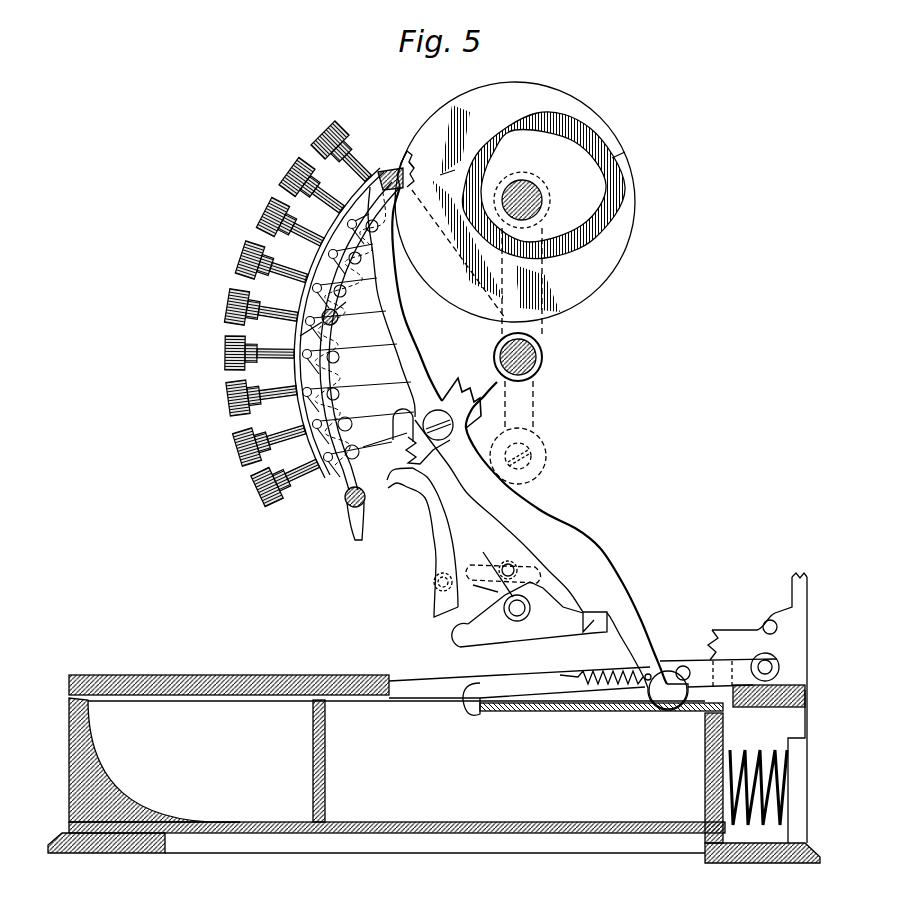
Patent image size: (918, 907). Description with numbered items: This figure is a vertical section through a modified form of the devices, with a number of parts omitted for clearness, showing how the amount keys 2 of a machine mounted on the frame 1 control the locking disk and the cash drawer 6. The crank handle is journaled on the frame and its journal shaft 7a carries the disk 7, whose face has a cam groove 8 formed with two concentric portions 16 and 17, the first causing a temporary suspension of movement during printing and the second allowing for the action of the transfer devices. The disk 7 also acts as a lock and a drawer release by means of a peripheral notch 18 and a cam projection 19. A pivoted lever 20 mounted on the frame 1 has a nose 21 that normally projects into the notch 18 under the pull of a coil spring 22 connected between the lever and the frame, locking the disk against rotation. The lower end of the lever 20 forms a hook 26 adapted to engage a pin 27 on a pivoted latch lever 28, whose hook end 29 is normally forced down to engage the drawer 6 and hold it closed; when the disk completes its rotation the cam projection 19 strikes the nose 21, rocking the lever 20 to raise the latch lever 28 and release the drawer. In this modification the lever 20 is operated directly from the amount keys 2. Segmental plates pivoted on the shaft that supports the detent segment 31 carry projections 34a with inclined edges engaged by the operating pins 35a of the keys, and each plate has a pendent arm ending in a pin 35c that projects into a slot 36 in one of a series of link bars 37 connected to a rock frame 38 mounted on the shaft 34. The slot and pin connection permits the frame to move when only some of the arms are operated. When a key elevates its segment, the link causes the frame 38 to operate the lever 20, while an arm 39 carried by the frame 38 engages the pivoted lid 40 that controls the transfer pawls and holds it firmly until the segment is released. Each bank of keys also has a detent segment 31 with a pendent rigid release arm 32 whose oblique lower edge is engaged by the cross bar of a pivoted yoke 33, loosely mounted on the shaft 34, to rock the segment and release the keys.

The frame 1 is at (536, 390).
The amount keys 2 is at (240, 256).
The cash drawer 6 is at (434, 720).
The disk 7 is at (515, 202).
The journal shaft 7a is at (534, 198).
The cam groove 8 is at (522, 118).
The concentric portion 16 is at (625, 152).
The concentric portion 17 is at (466, 175).
The peripheral notch 18 is at (410, 166).
The cam projection 19 is at (408, 150).
The pivoted lever 20 is at (540, 430).
The nose 21 is at (393, 179).
The coil spring 22 is at (627, 687).
The hook 26 is at (668, 702).
The pin 27 is at (685, 662).
The latch lever 28 is at (545, 678).
The hook end 29 is at (478, 710).
The detent segment 31 is at (487, 351).
The release arm 32 is at (433, 548).
The pivoted yoke 33 is at (522, 619).
The shaft 34 is at (517, 621).
The projections 34a is at (340, 357).
The operating pins 35a is at (300, 352).
The pin 35c is at (434, 582).
The slot 36 is at (503, 565).
The link bar 37 is at (493, 582).
The rock frame 38 is at (584, 628).
The arm 39 is at (428, 493).
The pivoted lid 40 is at (350, 530).